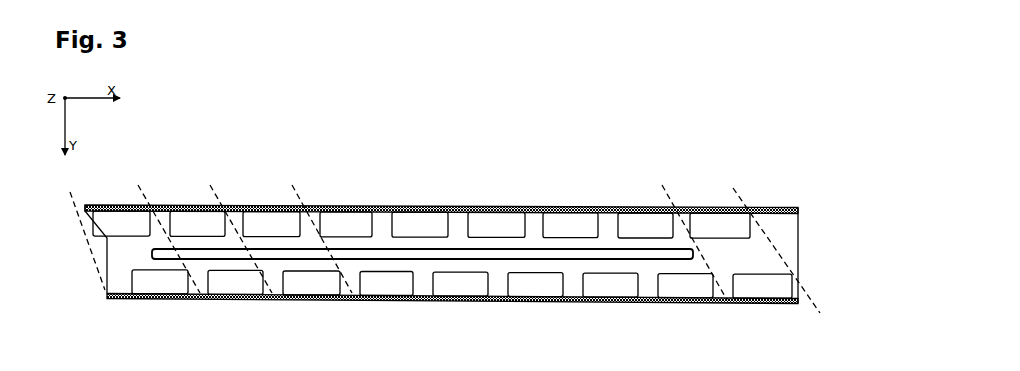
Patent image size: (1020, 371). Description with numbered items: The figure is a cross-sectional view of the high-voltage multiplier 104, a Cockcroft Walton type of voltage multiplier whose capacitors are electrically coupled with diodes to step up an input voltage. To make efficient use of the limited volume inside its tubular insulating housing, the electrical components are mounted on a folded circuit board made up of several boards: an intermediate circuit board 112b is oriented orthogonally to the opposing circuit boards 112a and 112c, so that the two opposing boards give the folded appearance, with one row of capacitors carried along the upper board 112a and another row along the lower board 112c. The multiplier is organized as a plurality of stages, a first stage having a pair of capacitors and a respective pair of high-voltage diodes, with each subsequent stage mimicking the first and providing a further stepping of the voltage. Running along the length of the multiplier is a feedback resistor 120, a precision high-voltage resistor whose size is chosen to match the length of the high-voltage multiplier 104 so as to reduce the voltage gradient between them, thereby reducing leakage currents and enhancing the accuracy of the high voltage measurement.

The high-voltage multiplier 104 is at (196, 153).
The circuit board 112a is at (490, 207).
The intermediate circuit board 112b is at (792, 225).
The circuit board 112c is at (453, 300).
The feedback resistor 120 is at (655, 259).